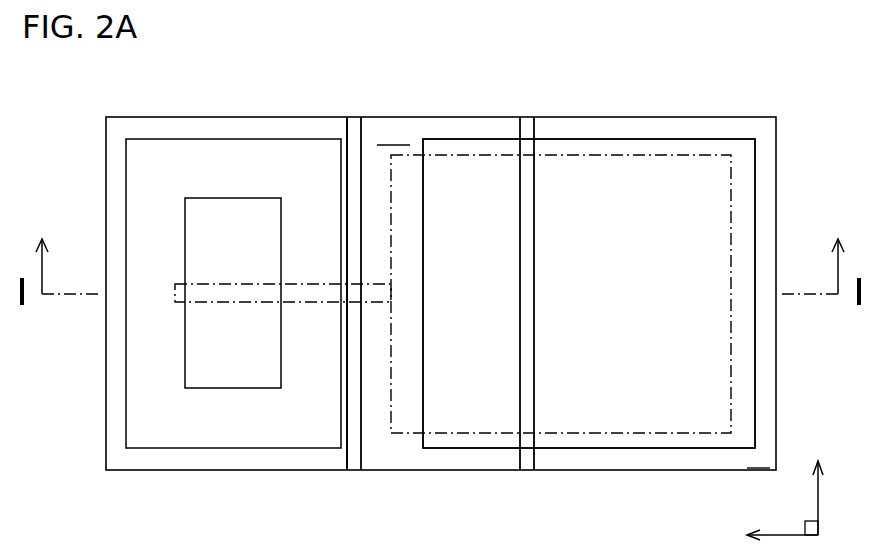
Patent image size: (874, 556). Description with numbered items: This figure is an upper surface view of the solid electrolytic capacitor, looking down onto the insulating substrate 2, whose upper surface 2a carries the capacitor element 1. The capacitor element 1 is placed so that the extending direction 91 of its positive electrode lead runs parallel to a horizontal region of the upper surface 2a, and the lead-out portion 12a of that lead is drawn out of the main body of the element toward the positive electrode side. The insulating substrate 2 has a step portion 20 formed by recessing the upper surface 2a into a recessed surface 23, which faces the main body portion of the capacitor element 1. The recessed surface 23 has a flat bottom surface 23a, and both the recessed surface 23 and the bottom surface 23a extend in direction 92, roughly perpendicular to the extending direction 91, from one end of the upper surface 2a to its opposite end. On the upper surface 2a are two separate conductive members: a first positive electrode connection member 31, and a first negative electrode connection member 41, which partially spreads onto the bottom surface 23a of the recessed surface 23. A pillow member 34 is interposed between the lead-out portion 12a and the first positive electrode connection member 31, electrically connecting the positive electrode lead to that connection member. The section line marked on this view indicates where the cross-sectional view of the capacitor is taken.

The capacitor element 1 is at (678, 152).
The insulating substrate 2 is at (764, 135).
The upper surface 2a is at (758, 458).
The lead-out portion 12a is at (298, 280).
The step portion 20 is at (440, 136).
The recessed surface 23 is at (357, 140).
The bottom surface 23a is at (393, 135).
The first positive electrode connection member 31 is at (236, 167).
The pillow member 34 is at (231, 372).
The first negative electrode connection member 41 is at (597, 152).
The extending direction 91 is at (780, 520).
The direction 92 is at (831, 488).